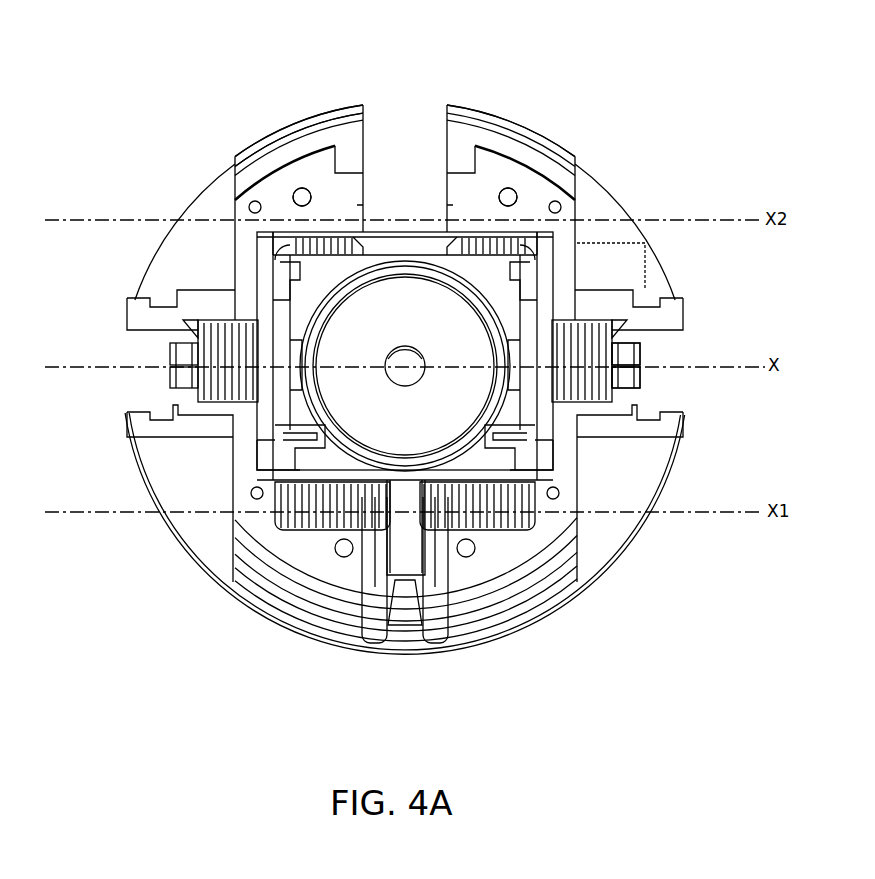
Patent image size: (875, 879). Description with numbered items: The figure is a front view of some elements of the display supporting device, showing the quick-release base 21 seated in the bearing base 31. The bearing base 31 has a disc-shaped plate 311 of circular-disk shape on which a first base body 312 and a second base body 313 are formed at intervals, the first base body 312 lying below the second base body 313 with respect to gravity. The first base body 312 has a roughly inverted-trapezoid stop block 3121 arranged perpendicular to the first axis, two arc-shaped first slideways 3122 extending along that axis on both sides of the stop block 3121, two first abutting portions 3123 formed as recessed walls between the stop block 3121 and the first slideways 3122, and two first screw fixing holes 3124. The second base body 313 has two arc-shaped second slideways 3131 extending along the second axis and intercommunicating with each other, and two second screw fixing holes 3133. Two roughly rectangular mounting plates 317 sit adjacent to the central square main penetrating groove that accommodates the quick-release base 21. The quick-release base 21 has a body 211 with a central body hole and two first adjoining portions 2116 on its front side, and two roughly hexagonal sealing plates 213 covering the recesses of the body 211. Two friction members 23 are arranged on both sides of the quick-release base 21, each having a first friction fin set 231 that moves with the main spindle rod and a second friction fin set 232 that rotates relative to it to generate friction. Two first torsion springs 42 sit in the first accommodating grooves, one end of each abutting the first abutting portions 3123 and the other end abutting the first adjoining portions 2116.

The bearing base 31 is at (170, 75).
The disc-shaped plate 311 is at (633, 265).
The first base body 312 is at (225, 497).
The stop block 3121 is at (405, 612).
The first slideways 3122 is at (267, 560).
The first abutting portions 3123 is at (375, 632).
The first screw fixing holes 3124 is at (342, 556).
The second base body 313 is at (233, 198).
The second slideways 3131 is at (265, 165).
The second screw fixing holes 3133 is at (302, 188).
The mounting plates 317 is at (267, 442).
The quick-release base 21 is at (388, 292).
The body 211 is at (293, 396).
The sealing plates 213 is at (282, 308).
The first adjoining portions 2116 is at (265, 440).
The friction members 23 is at (199, 336).
The first friction fin set 231 is at (615, 337).
The second friction fin set 232 is at (615, 398).
The first torsion springs 42 is at (323, 522).